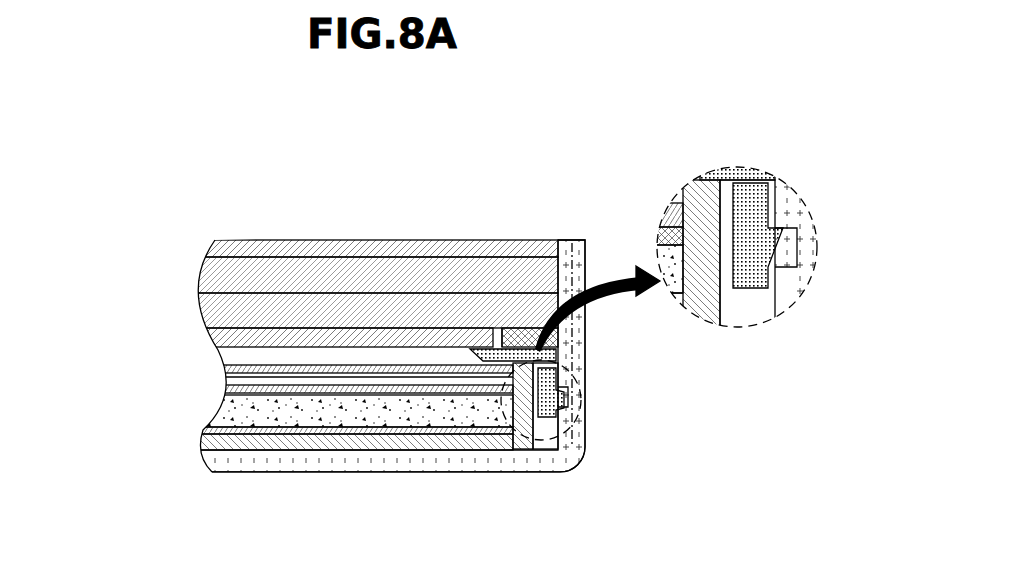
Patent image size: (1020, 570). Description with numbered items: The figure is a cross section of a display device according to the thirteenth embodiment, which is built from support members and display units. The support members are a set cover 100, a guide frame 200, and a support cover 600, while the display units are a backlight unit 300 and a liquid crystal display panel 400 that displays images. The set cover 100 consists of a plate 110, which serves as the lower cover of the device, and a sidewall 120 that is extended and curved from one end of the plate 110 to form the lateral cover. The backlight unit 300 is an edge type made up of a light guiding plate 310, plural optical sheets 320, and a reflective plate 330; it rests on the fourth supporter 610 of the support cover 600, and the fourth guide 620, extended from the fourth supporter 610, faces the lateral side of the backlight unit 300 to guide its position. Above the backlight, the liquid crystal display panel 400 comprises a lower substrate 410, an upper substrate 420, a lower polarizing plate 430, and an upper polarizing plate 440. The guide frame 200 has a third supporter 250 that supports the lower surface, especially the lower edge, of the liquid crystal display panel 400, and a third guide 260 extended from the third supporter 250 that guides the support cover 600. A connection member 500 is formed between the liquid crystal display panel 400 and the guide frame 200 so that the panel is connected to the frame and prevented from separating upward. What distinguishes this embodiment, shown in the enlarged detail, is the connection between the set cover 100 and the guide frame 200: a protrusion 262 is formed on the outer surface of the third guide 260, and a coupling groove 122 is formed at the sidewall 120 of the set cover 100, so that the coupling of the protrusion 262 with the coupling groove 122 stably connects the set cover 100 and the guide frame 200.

The set cover 100 is at (455, 364).
The plate 110 is at (527, 467).
The sidewall 120 is at (572, 428).
The coupling groove 122 is at (790, 252).
The guide frame 200 is at (595, 396).
The third supporter 250 is at (548, 361).
The third guide 260 is at (568, 393).
The protrusion 262 is at (784, 210).
The backlight unit 300 is at (273, 403).
The light guiding plate 310 is at (210, 407).
The optical sheets 320 is at (217, 389).
The reflective plate 330 is at (214, 432).
The liquid crystal display panel 400 is at (295, 294).
The lower substrate 410 is at (210, 314).
The upper substrate 420 is at (208, 285).
The lower polarizing plate 430 is at (214, 344).
The upper polarizing plate 440 is at (210, 254).
The connection member 500 is at (515, 335).
The support cover 600 is at (363, 461).
The fourth supporter 610 is at (450, 442).
The fourth guide 620 is at (527, 435).